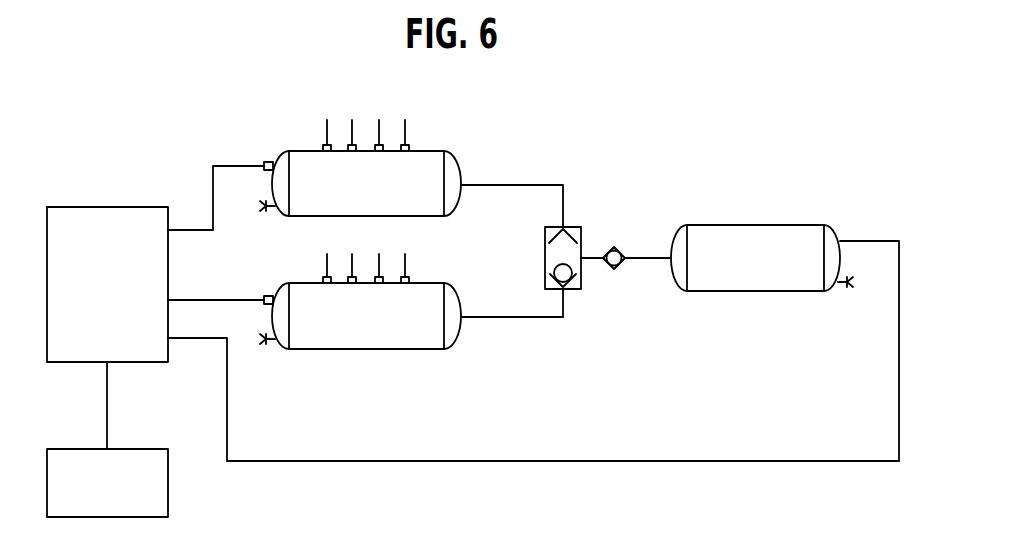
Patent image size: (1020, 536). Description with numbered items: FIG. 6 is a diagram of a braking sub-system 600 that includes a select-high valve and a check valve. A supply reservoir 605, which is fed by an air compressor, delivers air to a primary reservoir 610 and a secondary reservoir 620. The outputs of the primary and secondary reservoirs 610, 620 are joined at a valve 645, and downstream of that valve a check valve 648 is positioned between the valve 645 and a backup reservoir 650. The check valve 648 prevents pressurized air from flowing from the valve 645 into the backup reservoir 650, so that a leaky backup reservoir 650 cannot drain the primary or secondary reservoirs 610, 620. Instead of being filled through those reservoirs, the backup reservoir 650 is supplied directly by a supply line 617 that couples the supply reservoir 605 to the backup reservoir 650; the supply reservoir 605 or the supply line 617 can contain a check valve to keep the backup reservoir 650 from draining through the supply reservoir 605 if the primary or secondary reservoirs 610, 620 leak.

The air supply system 600 is at (627, 157).
The supply reservoir 605 is at (124, 207).
The primary reservoir 610 is at (427, 150).
The secondary reservoir 620 is at (422, 352).
The valve 645 is at (551, 226).
The check valve 648 is at (617, 247).
The backup reservoir 650 is at (786, 225).
The supply line 617 is at (625, 463).